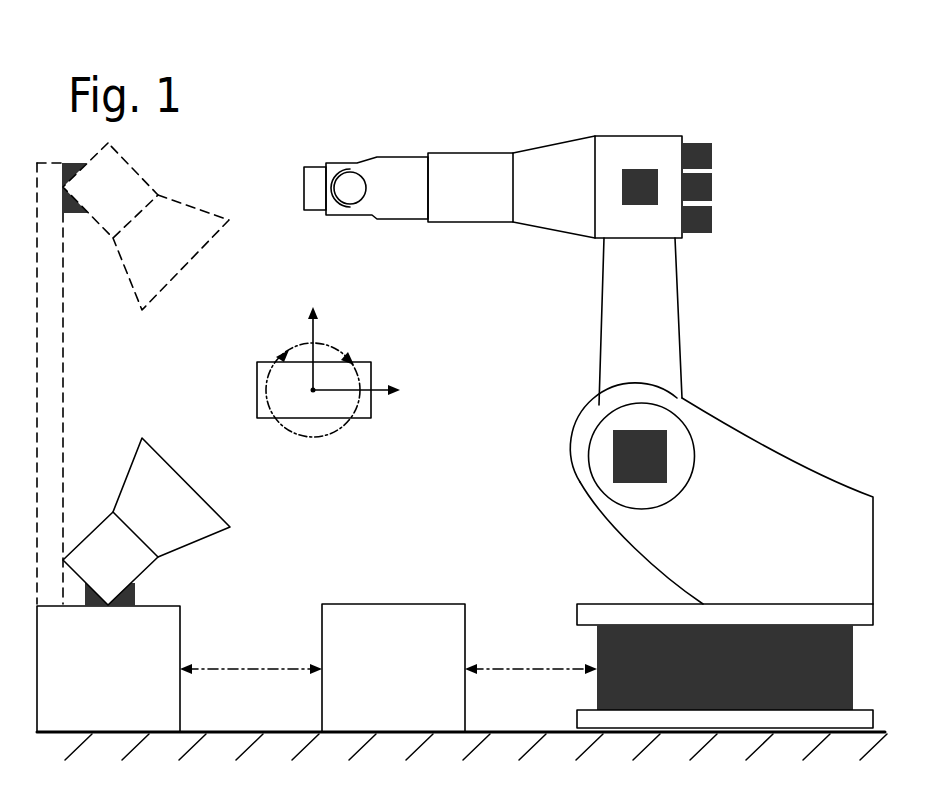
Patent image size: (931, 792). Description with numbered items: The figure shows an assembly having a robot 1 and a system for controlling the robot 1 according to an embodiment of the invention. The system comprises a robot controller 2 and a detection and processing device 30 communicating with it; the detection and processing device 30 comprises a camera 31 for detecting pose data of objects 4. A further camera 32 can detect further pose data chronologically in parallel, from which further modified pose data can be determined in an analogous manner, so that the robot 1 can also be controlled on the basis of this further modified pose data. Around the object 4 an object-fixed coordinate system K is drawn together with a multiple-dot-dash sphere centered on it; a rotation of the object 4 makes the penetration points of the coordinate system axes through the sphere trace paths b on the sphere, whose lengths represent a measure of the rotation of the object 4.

The robot 1 is at (744, 541).
The robot controller 2 is at (384, 683).
The object 4 is at (394, 435).
The detection and processing device 30 is at (94, 681).
The camera 31 is at (146, 522).
The camera 32 is at (148, 253).